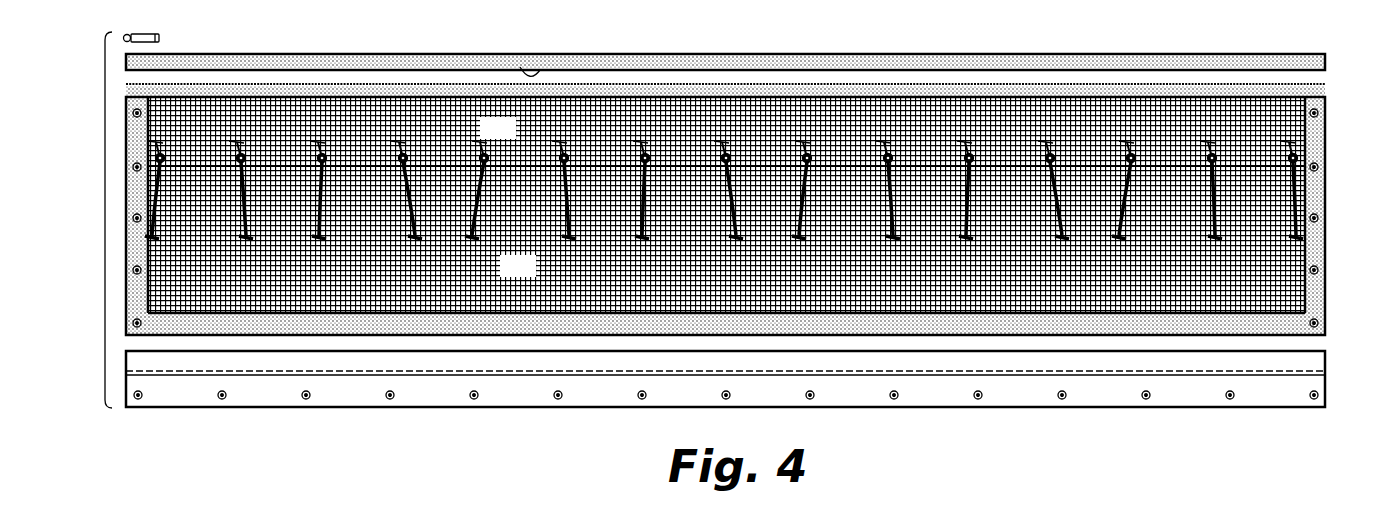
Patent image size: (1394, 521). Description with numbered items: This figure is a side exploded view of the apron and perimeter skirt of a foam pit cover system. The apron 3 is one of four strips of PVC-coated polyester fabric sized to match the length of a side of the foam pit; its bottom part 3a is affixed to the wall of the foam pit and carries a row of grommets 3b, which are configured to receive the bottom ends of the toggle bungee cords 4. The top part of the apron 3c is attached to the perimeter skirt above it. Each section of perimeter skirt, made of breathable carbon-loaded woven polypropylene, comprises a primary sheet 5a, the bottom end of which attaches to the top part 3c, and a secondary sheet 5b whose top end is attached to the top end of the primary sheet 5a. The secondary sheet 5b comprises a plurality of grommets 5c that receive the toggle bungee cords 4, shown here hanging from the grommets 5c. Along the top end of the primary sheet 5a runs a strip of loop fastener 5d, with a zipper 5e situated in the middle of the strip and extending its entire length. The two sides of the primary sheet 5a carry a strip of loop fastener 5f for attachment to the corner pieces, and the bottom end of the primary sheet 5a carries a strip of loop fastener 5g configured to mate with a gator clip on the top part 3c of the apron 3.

The apron 3 is at (324, 46).
The bottom part of the apron 3a is at (353, 400).
The grommets 3b is at (1320, 218).
The top part of the apron 3c is at (1305, 362).
The toggle bungee cords 4 is at (328, 186).
The primary sheet 5a is at (511, 137).
The secondary sheet 5b is at (531, 275).
The grommets 5c is at (240, 153).
The strip of loop fastener 5d is at (462, 93).
The zipper 5e is at (560, 83).
The strip of loop fastener 5f is at (1313, 243).
The strip of loop fastener 5g is at (1297, 323).